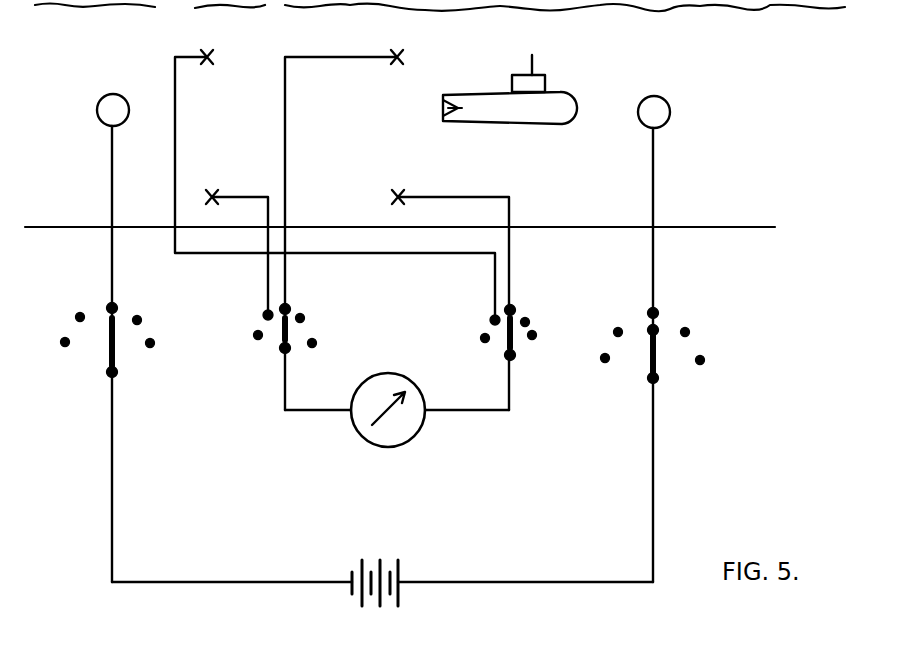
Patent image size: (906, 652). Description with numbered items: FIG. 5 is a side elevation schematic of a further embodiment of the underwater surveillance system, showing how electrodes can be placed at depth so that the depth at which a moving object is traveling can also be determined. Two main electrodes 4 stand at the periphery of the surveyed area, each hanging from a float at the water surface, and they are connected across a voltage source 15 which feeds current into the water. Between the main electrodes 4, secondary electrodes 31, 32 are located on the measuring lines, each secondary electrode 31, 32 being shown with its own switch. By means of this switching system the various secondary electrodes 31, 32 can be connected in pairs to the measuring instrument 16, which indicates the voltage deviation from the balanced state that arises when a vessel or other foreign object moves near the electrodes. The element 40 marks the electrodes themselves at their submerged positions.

The main electrode 4 is at (97, 110).
The voltage source 15 is at (445, 542).
The instrument 16 is at (358, 435).
The secondary electrode 31 is at (213, 64).
The secondary electrode 32 is at (240, 156).
The electrode with ion emission 40 is at (95, 345).